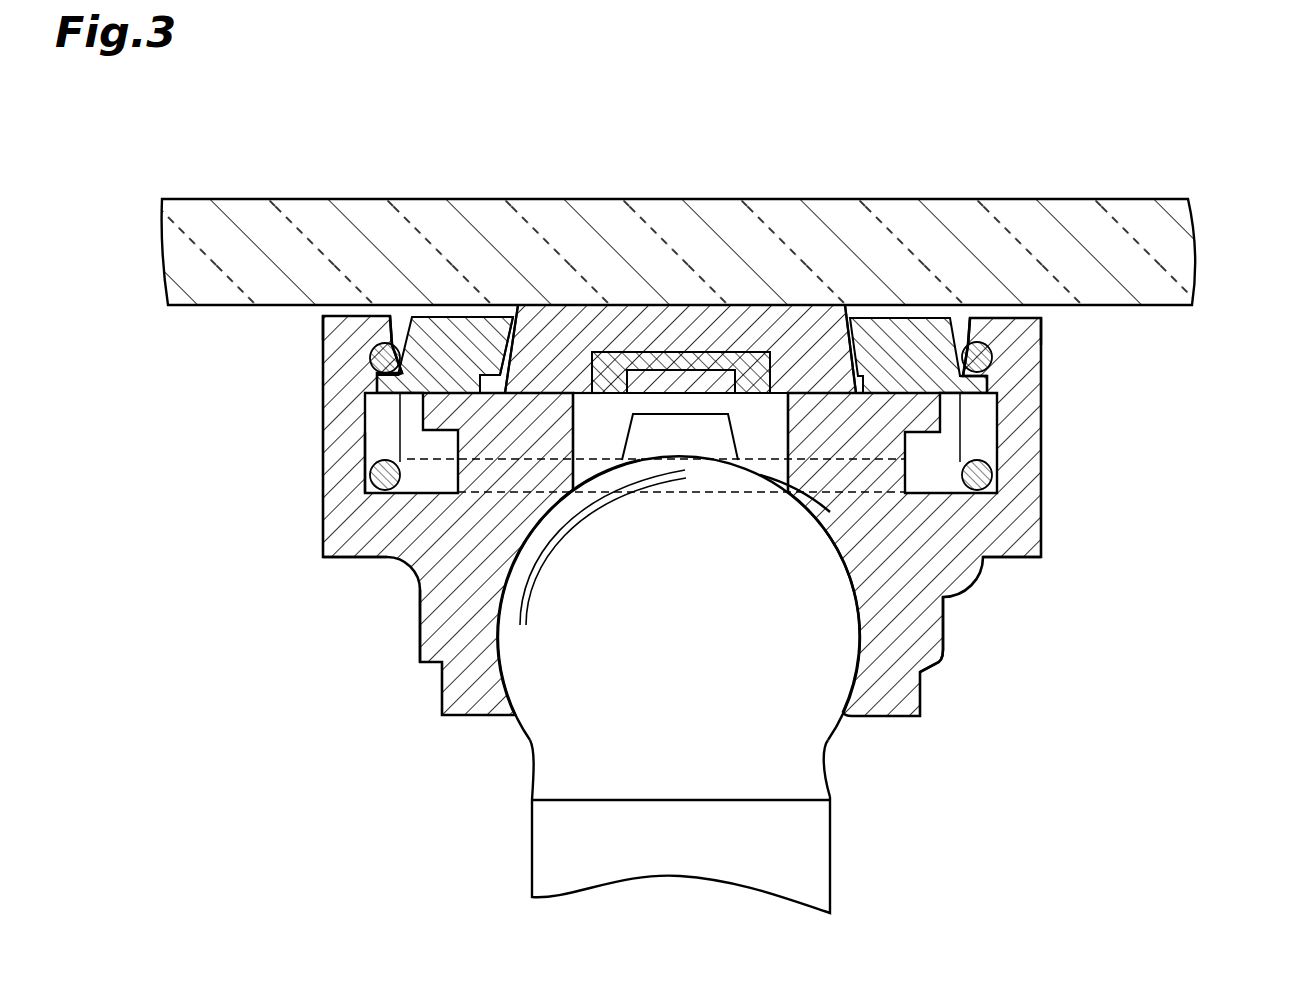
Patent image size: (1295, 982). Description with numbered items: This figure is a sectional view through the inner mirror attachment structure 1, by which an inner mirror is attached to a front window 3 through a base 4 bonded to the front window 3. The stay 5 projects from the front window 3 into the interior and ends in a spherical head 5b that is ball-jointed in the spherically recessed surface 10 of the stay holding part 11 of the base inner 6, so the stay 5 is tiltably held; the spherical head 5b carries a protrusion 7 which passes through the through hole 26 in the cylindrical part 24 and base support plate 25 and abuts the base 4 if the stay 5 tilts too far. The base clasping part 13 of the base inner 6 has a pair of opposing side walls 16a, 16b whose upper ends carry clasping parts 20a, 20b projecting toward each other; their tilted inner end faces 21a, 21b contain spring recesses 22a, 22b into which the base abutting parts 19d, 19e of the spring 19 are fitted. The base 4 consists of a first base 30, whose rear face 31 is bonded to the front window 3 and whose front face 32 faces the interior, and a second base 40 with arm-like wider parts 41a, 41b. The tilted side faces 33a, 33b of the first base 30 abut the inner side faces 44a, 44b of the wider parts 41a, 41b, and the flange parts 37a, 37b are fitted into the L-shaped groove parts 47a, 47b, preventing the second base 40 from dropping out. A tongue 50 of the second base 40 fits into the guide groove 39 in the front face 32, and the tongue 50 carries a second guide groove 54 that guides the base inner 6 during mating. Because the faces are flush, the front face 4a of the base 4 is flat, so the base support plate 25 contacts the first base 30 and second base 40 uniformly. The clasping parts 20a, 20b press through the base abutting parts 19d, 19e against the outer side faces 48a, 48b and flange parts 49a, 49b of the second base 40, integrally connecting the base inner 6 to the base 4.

The inner mirror attachment structure 1 is at (1143, 771).
The front window 3 is at (1198, 310).
The base 4 is at (689, 393).
The front face of the base 4a is at (795, 350).
The stay 5 is at (840, 855).
The spherical head 5b is at (558, 705).
The base inner 6 is at (952, 645).
The protrusion 7 is at (622, 440).
The spherically recessed surface 10 is at (822, 672).
The stay holding part 11 is at (936, 675).
The base clasping part 13 is at (1060, 562).
The side wall 16a is at (1042, 467).
The side wall 16b is at (323, 477).
The spring 19 is at (430, 490).
The base abutting part 19d is at (985, 380).
The base abutting part 19e is at (370, 351).
The clasping part 20a is at (1035, 320).
The clasping part 20b is at (363, 330).
The inner end face 21a is at (990, 337).
The inner end face 21b is at (393, 340).
The spring recess 22a is at (998, 362).
The spring recess 22b is at (377, 373).
The cylindrical part 24 is at (386, 558).
The base support plate 25 is at (400, 420).
The through hole 26 is at (587, 400).
The first base 30 is at (668, 298).
The rear face 31 is at (640, 340).
The front face 32 is at (740, 330).
The side face 33a is at (880, 345).
The side face 33b is at (513, 312).
The flange part 37a is at (978, 540).
The flange part 37b is at (412, 565).
The guide groove 39 is at (667, 355).
The second base 40 is at (478, 325).
The wider part 41a is at (898, 343).
The wider part 41b is at (440, 333).
The inner side face 44a is at (860, 385).
The inner side face 44b is at (495, 385).
The groove part 47a is at (870, 388).
The groove part 47b is at (530, 572).
The outer side face 48a is at (967, 325).
The outer side face 48b is at (397, 337).
The flange part 49a is at (960, 415).
The flange part 49b is at (422, 410).
The tongue 50 is at (700, 350).
The guide groove 54 is at (700, 372).